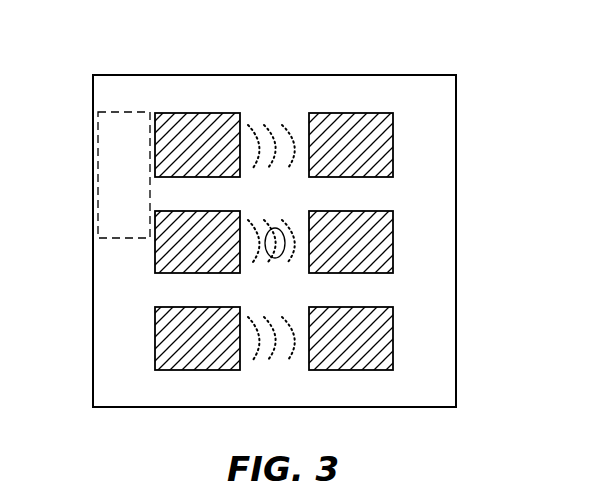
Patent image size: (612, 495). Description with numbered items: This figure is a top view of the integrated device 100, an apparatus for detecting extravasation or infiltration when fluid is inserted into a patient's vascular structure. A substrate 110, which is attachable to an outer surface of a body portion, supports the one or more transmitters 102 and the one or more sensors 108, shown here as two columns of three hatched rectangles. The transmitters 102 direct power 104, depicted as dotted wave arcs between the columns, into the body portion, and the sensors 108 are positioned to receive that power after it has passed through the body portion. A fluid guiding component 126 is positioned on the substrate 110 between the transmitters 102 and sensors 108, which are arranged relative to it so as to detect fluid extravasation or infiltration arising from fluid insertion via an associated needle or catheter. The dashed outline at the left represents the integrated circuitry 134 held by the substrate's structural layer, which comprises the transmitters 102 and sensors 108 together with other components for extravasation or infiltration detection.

The integrated device 100 is at (90, 71).
The transmitters 102 is at (160, 113).
The power 104 is at (281, 117).
The sensors 108 is at (352, 113).
The substrate 110 is at (457, 186).
The fluid guiding component 126 is at (268, 257).
The integrated circuitry 134 is at (98, 142).